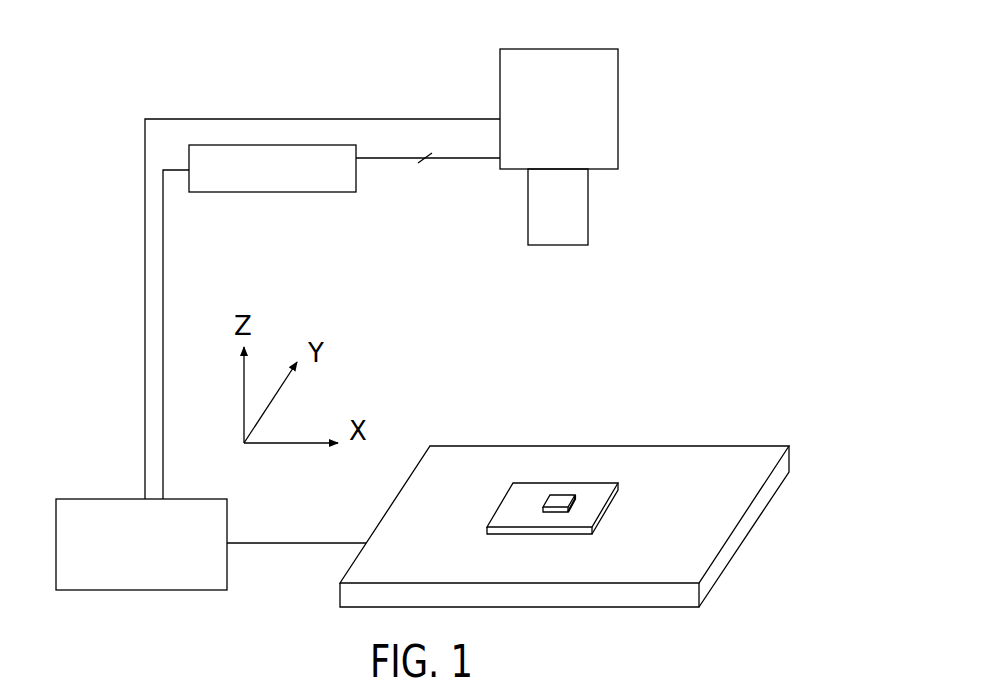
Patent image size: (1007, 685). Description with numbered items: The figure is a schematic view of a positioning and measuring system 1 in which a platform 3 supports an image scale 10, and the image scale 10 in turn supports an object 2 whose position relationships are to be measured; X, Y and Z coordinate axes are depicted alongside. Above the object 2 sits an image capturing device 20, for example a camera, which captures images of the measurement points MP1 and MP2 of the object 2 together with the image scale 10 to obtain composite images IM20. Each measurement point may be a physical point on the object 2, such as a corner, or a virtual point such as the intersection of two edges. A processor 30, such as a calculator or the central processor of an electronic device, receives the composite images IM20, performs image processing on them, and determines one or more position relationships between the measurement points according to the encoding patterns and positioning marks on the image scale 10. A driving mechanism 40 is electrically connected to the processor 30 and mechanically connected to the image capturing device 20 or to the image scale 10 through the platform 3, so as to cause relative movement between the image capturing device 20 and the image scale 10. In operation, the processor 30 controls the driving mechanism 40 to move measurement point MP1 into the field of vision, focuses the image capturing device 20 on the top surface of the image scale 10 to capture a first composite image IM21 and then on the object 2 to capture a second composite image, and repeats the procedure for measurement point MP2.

The positioning and measuring system 1 is at (787, 153).
The object 2 is at (566, 497).
The platform 3 is at (707, 455).
The image scale 10 is at (533, 488).
The image capturing device 20 is at (618, 153).
The processor 30 is at (258, 186).
The driving mechanism 40 is at (103, 503).
The measurement point MP1 is at (543, 510).
The measurement point MP2 is at (563, 512).
The composite images IM20 is at (431, 140).
The first composite image IM21 is at (431, 199).